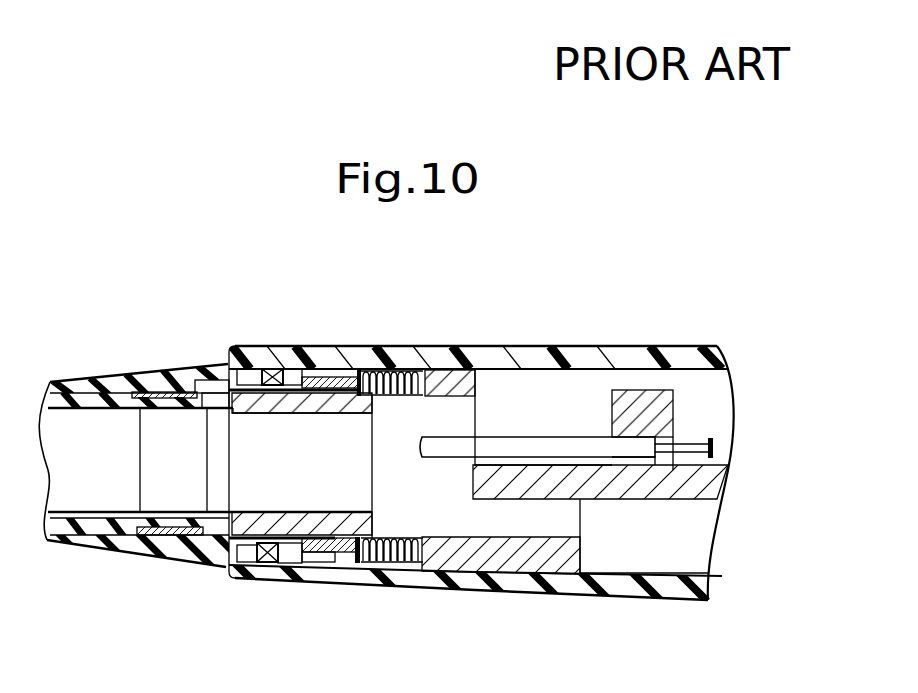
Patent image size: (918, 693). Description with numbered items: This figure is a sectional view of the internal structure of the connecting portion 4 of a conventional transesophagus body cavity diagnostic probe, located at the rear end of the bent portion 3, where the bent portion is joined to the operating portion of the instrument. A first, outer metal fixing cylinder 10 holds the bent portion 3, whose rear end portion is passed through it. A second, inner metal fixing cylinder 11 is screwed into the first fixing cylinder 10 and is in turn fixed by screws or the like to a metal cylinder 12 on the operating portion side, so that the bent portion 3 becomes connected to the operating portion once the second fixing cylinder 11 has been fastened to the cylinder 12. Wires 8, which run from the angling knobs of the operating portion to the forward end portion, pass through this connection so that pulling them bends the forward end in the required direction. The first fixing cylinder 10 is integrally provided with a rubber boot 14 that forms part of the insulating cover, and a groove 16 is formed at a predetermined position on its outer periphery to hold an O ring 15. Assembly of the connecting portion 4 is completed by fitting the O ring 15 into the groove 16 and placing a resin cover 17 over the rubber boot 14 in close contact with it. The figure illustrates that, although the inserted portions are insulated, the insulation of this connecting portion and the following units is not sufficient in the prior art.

The bent portion 3 is at (104, 476).
The connecting portion 4 is at (403, 603).
The wires 8 is at (690, 443).
The first fixing cylinder 10 is at (212, 379).
The second fixing cylinder 11 is at (222, 571).
The cylinder 12 is at (448, 350).
The rubber boot 14 is at (85, 381).
The O ring 15 is at (270, 369).
The groove 16 is at (262, 567).
The resin cover 17 is at (353, 352).